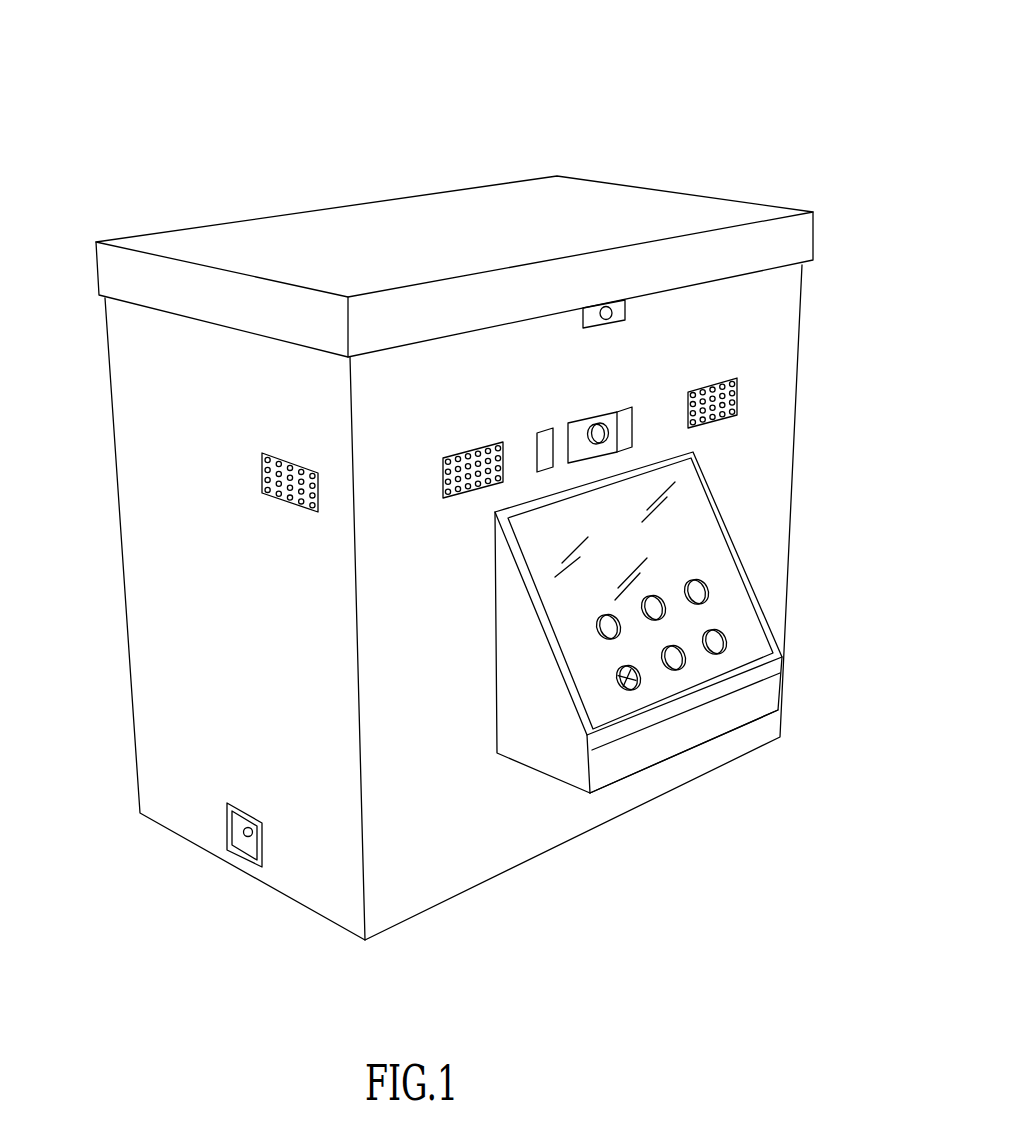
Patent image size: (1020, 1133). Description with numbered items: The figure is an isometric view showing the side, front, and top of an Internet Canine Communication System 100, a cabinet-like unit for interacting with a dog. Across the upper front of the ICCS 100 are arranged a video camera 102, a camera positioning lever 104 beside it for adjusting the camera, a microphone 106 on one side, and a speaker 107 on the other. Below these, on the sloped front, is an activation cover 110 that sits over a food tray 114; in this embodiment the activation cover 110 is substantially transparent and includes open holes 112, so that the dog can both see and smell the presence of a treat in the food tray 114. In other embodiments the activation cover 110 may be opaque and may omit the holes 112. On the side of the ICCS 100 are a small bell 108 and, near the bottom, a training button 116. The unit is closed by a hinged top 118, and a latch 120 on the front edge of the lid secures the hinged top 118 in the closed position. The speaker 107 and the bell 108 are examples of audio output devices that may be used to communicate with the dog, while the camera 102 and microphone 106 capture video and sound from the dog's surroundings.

The Internet Canine Communication System 100 is at (248, 125).
The video camera 102 is at (610, 433).
The camera positioning lever 104 is at (540, 433).
The microphone 106 is at (472, 450).
The speaker 107 is at (737, 420).
The small bell 108 is at (278, 490).
The activation cover 110 is at (660, 557).
The open holes 112 is at (678, 645).
The food tray 114 is at (698, 723).
The training button 116 is at (245, 832).
The hinged top 118 is at (605, 208).
The latch 120 is at (622, 312).